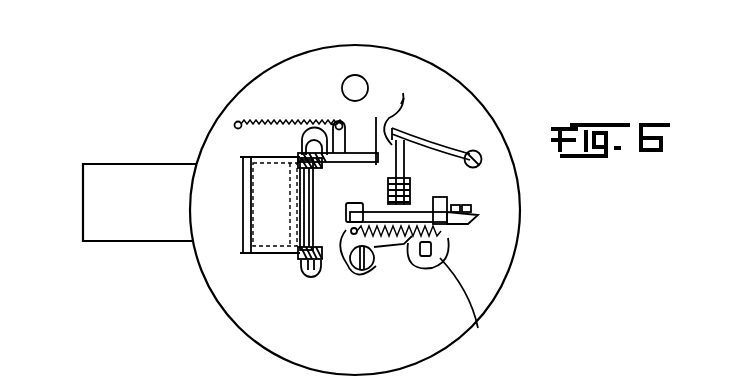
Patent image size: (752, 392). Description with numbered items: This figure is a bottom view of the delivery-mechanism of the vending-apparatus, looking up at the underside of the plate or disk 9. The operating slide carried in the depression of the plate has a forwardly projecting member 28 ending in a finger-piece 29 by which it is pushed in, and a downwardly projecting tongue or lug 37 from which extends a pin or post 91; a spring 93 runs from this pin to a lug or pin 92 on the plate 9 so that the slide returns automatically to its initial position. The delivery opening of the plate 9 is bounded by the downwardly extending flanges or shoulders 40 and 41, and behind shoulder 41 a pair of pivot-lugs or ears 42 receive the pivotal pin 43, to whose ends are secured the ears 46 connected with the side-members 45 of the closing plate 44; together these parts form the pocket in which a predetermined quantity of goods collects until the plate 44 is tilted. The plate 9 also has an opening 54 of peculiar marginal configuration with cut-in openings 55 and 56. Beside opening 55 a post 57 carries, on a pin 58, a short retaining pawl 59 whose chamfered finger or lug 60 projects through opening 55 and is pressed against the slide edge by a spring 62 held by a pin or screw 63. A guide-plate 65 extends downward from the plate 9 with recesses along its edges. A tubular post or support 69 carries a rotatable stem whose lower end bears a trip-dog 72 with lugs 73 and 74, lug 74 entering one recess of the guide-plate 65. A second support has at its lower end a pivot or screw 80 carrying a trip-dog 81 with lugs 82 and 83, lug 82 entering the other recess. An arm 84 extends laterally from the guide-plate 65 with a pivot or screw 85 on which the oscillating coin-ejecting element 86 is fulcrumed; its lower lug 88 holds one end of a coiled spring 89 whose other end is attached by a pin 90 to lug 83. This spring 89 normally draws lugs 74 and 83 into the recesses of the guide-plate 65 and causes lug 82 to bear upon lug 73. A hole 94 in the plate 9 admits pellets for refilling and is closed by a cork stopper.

The plate 9 is at (400, 60).
The forwardly projecting member 28 is at (184, 234).
The finger-piece 29 is at (83, 211).
The tongue or lug 37 is at (345, 158).
The flange or shoulder 40 is at (243, 182).
The flange or shoulder 41 is at (297, 225).
The pivot-lugs or ears 42 is at (343, 164).
The pivotal pin 43 is at (281, 207).
The closing plate 44 is at (253, 213).
The side-members 45 is at (302, 148).
The pivot-lugs or ears 46 is at (306, 180).
The opening 54 is at (384, 119).
The cut-in opening 55 is at (408, 88).
The cut-in opening 56 is at (456, 190).
The post 57 is at (420, 188).
The pin 58 is at (381, 188).
The retaining pawl 59 is at (418, 170).
The finger or lug 60 is at (414, 146).
The spring 62 is at (464, 150).
The pin or screw 63 is at (482, 160).
The guide-plate 65 is at (449, 236).
The post or support 69 is at (476, 310).
The trip-dog 72 is at (445, 244).
The lug or projection 73 is at (396, 258).
The lug or projection 74 is at (476, 196).
The pivot or screw 80 is at (361, 272).
The trip-dog 81 is at (351, 270).
The lug or projection 82 is at (426, 256).
The lug or projection 83 is at (342, 240).
The arm 84 is at (476, 221).
The pivot or screw 85 is at (470, 206).
The coin-ejecting element 86 is at (478, 213).
The lug or projection 88 is at (456, 226).
The coiled spring 89 is at (424, 268).
The pin 90 is at (351, 229).
The pin or post 91 is at (323, 123).
The lug or pin 92 is at (236, 123).
The spring 93 is at (292, 121).
The hole 94 is at (360, 86).